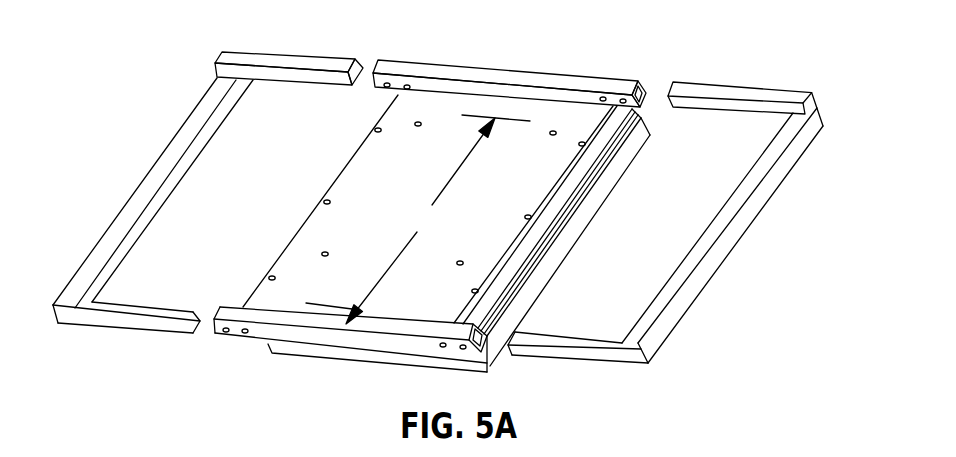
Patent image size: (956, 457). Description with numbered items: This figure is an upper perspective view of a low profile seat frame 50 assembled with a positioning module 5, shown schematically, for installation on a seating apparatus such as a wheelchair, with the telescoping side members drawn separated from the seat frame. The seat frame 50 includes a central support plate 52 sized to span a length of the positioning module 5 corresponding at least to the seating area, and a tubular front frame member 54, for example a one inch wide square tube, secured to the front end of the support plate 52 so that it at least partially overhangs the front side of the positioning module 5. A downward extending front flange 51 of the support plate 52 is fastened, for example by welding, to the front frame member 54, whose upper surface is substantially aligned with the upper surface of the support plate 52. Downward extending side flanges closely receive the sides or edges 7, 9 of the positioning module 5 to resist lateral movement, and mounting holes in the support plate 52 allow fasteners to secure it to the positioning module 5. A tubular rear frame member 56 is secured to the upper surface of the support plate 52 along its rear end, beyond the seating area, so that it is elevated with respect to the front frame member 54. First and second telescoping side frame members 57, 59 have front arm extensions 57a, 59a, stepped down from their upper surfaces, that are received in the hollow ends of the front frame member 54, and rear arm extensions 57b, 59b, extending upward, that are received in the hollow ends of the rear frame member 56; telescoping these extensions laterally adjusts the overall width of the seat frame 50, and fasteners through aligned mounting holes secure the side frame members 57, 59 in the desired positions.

The positioning module 5 is at (559, 261).
The side or edge of the positioning module 7 is at (267, 350).
The side or edge of the positioning module 9 is at (617, 168).
The low profile seat frame 50 is at (445, 213).
The front flange 51 is at (481, 352).
The central support plate 52 is at (349, 357).
The front frame member 54 is at (230, 337).
The rear frame member 56 is at (427, 70).
The first telescoping side frame member 57 is at (208, 193).
The front arm extension 57a is at (122, 323).
The rear arm extension 57b is at (282, 62).
The second telescoping side frame member 59 is at (665, 222).
The front arm extension 59a is at (593, 363).
The rear arm extension 59b is at (731, 90).